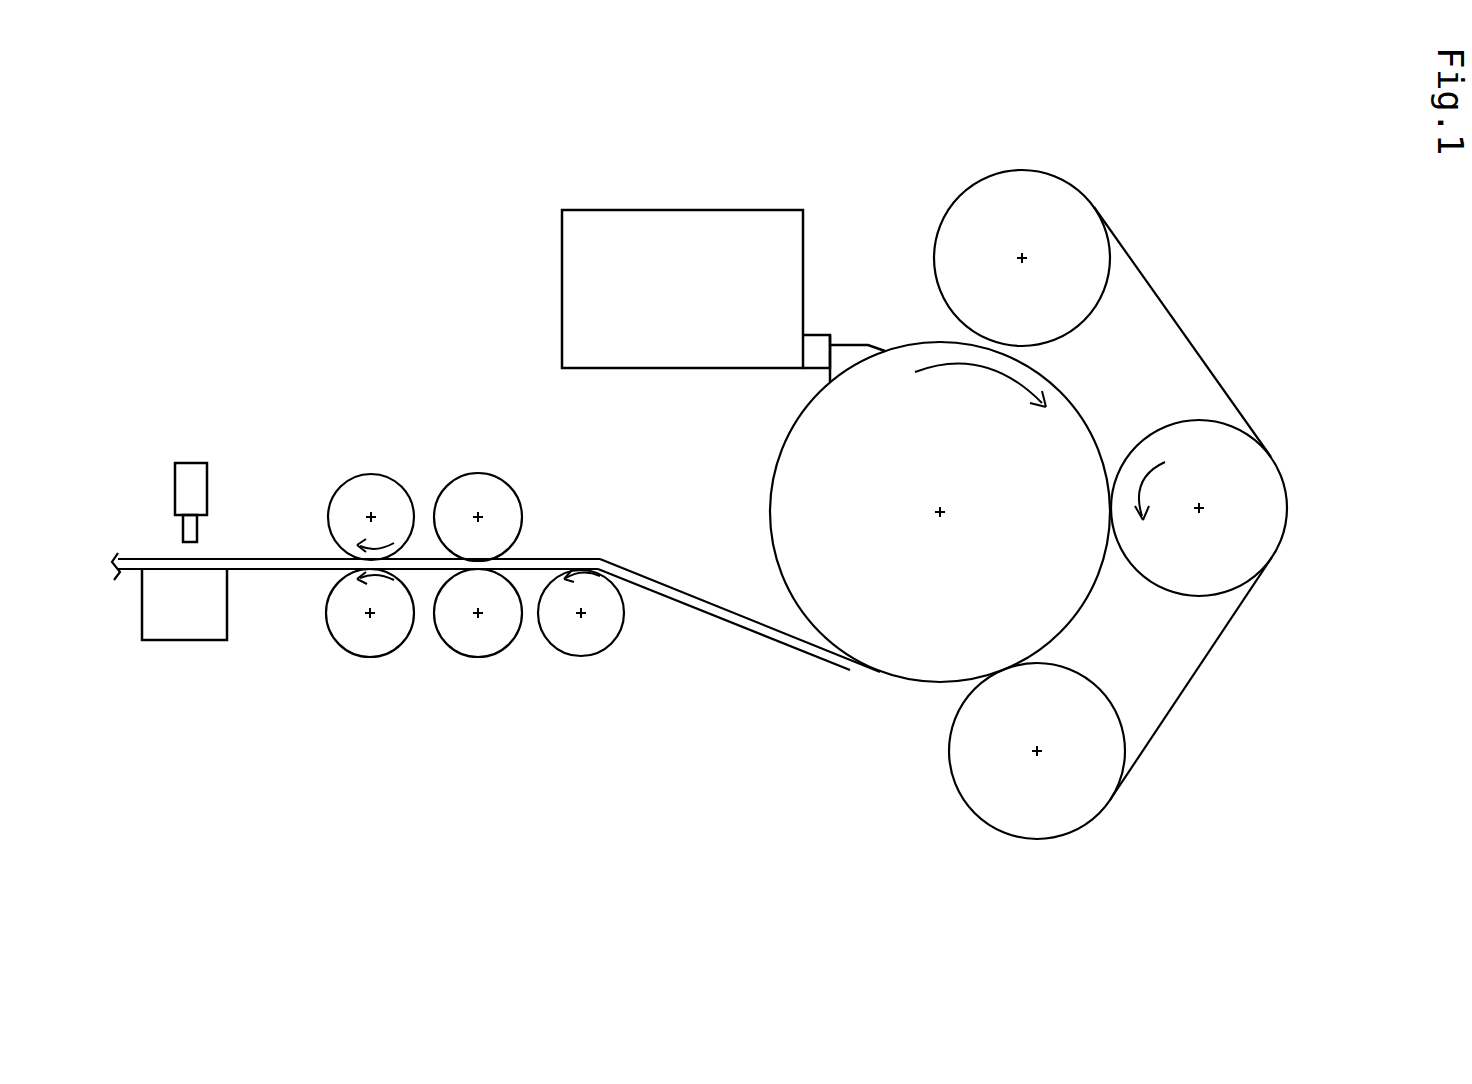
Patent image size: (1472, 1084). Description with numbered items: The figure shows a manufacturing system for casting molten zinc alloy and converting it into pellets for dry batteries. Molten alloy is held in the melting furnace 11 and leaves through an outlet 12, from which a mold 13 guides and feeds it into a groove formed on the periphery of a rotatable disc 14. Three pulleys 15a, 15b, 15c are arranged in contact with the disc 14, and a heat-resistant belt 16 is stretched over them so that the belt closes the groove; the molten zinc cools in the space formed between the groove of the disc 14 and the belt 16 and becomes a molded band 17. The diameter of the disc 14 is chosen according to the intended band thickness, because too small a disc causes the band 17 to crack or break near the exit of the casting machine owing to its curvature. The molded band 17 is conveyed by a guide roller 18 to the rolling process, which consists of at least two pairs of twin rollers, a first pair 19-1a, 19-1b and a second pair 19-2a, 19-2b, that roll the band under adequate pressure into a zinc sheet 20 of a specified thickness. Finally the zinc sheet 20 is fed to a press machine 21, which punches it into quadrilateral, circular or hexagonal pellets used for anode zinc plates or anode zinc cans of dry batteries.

The melting furnace 11 is at (657, 230).
The outlet 12 is at (812, 352).
The mold 13 is at (847, 352).
The rotatable disc 14 is at (1074, 412).
The pulley 15a is at (1027, 200).
The pulley 15b is at (1268, 497).
The pulley 15c is at (1036, 822).
The heat-resistant belt 16 is at (1186, 336).
The molded band 17 is at (729, 621).
The guide roller 18 is at (585, 648).
The twin roller 19-2a is at (364, 486).
The twin roller 19-1a is at (478, 486).
The twin roller 19-2b is at (362, 656).
The twin roller 19-1b is at (483, 656).
The zinc sheet 20 is at (272, 558).
The press machine 21 is at (198, 468).